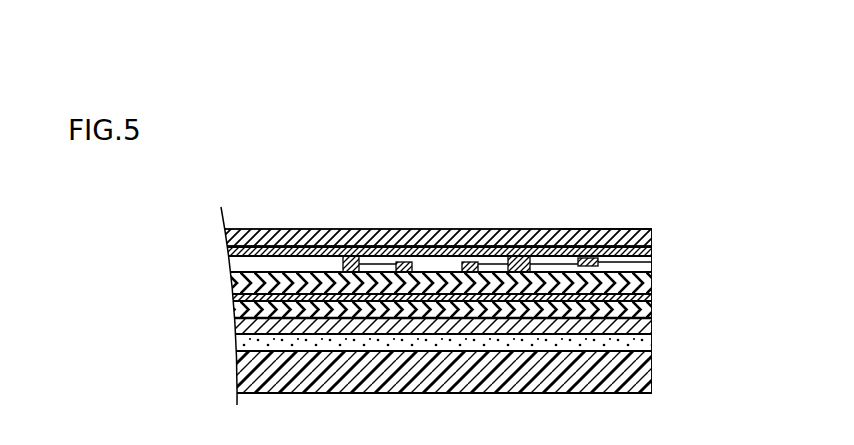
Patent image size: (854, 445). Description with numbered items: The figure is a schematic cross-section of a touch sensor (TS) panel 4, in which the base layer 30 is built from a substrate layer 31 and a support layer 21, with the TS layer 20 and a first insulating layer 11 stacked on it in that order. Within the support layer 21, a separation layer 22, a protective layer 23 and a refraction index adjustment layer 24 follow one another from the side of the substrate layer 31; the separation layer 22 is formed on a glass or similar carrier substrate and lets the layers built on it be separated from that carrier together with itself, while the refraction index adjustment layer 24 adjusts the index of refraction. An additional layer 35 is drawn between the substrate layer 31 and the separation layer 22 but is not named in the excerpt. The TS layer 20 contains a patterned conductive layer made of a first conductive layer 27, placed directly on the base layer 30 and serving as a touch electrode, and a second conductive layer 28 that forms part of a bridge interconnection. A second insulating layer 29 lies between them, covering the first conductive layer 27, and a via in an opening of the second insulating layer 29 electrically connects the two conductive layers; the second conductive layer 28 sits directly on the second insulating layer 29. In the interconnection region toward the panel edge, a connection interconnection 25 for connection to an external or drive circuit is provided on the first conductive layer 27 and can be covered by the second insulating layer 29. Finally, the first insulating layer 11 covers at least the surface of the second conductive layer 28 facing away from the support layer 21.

The TS panel 4 is at (687, 170).
The first insulating layer 11 is at (598, 238).
The TS layer 20 is at (166, 222).
The second conductive layer 28 is at (224, 235).
The second insulating layer 29 is at (230, 261).
The first conductive layer 27 is at (231, 272).
The connection interconnection 25 is at (653, 262).
The base layer 30 is at (128, 298).
The support layer 21 is at (163, 298).
The refraction index adjustment layer 24 is at (233, 292).
The protective layer 23 is at (236, 316).
The separation layer 22 is at (237, 333).
The adhesive layer 35 is at (238, 348).
The substrate layer 31 is at (240, 383).